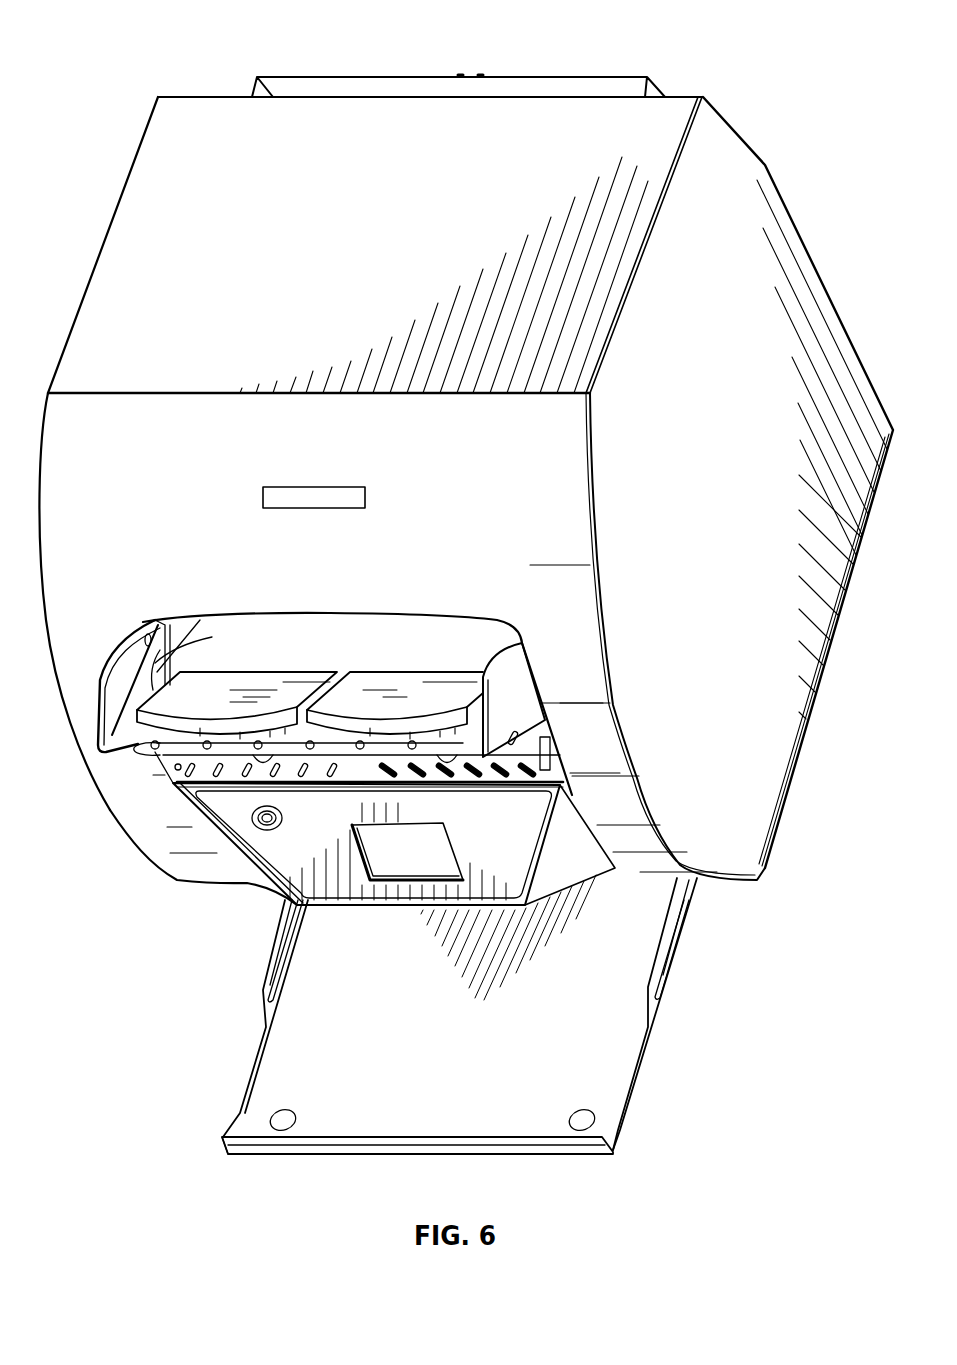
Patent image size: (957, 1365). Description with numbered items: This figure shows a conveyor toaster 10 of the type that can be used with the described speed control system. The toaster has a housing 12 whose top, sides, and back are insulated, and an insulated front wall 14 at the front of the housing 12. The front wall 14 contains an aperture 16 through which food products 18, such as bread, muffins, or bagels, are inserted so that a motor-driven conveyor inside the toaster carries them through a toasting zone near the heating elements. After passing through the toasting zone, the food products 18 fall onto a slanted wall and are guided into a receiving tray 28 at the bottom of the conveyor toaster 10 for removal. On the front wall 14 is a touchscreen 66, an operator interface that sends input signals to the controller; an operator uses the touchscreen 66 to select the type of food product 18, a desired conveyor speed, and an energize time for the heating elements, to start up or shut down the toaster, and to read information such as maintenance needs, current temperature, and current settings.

The conveyor toaster 10 is at (835, 51).
The housing 12 is at (727, 183).
The insulated front wall 14 is at (150, 851).
The aperture 16 is at (120, 727).
The food products 18 is at (237, 687).
The receiving tray 28 is at (607, 1090).
The touchscreen 66 is at (433, 858).